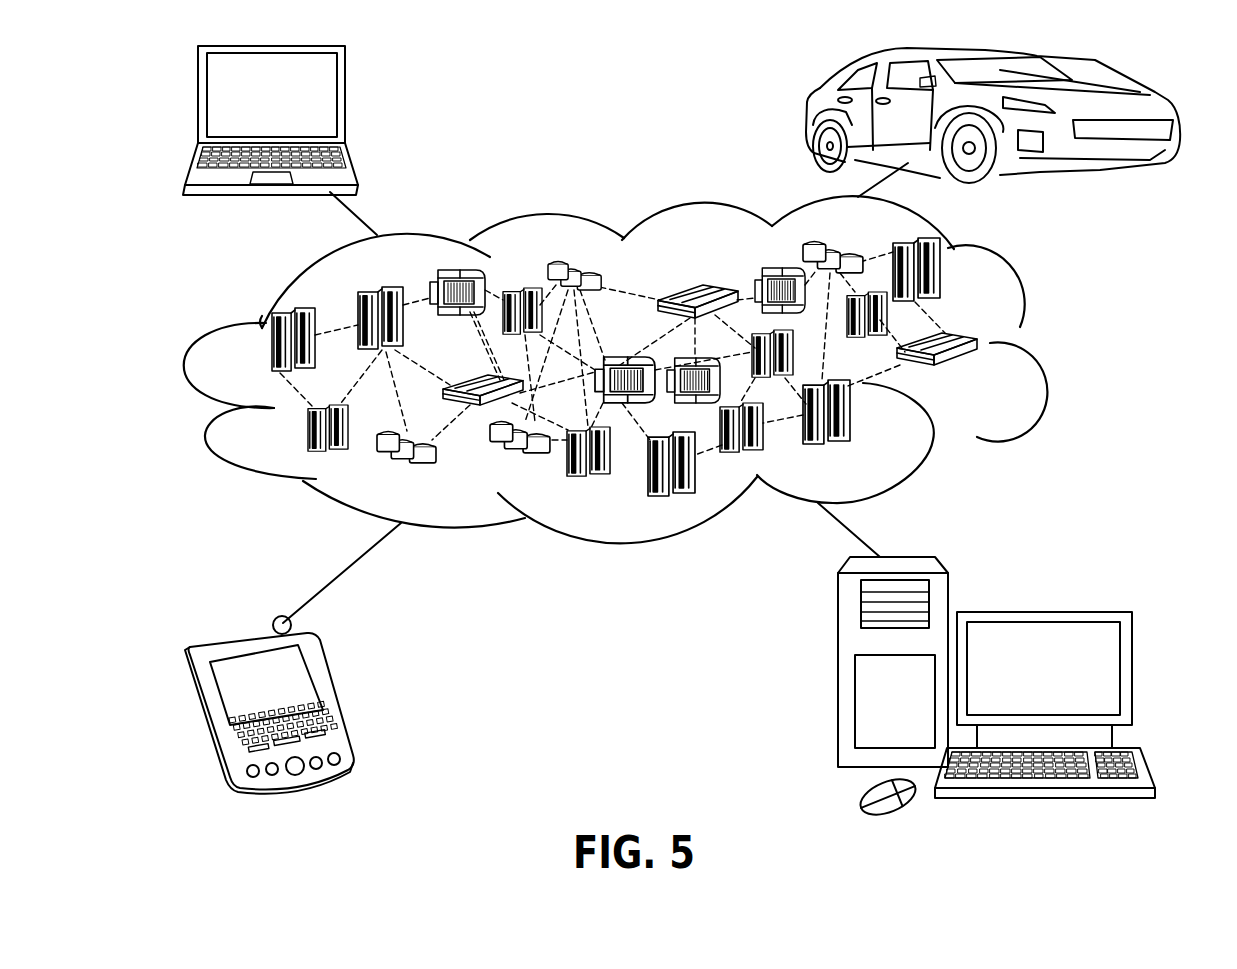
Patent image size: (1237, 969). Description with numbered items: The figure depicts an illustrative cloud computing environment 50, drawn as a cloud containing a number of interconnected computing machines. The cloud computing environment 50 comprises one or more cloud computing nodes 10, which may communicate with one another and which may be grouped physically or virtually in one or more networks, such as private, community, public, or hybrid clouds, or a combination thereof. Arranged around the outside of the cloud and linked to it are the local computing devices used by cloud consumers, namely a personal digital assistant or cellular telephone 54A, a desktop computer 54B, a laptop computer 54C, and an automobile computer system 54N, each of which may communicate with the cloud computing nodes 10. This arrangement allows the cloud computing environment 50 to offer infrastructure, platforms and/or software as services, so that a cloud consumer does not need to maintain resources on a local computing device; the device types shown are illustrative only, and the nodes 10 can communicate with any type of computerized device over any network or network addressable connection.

The laptop computer 54C is at (345, 102).
The automobile computer system 54N is at (806, 112).
The personal digital assistant (PDA) or cellular telephone 54A is at (333, 692).
The desktop computer 54B is at (1040, 612).
The cloud computing environment 50 is at (1043, 348).
The cloud computing node 10 is at (982, 377).